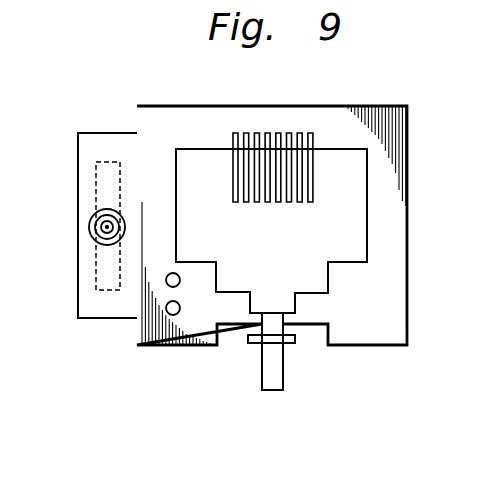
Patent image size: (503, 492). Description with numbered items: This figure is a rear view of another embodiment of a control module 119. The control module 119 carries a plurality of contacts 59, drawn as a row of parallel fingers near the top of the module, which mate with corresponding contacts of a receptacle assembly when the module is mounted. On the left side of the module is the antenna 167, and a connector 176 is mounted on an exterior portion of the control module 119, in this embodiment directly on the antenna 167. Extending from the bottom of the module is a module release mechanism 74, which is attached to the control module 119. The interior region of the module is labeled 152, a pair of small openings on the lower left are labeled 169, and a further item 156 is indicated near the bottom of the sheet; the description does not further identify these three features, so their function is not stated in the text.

The control module 119 is at (175, 87).
The chamber 152 is at (344, 223).
The contacts 59 is at (236, 133).
The antenna 167 is at (108, 162).
The connector 176 is at (88, 228).
The holes 169 is at (180, 304).
The module release mechanism 74 is at (284, 366).
The lead 156 is at (270, 491).